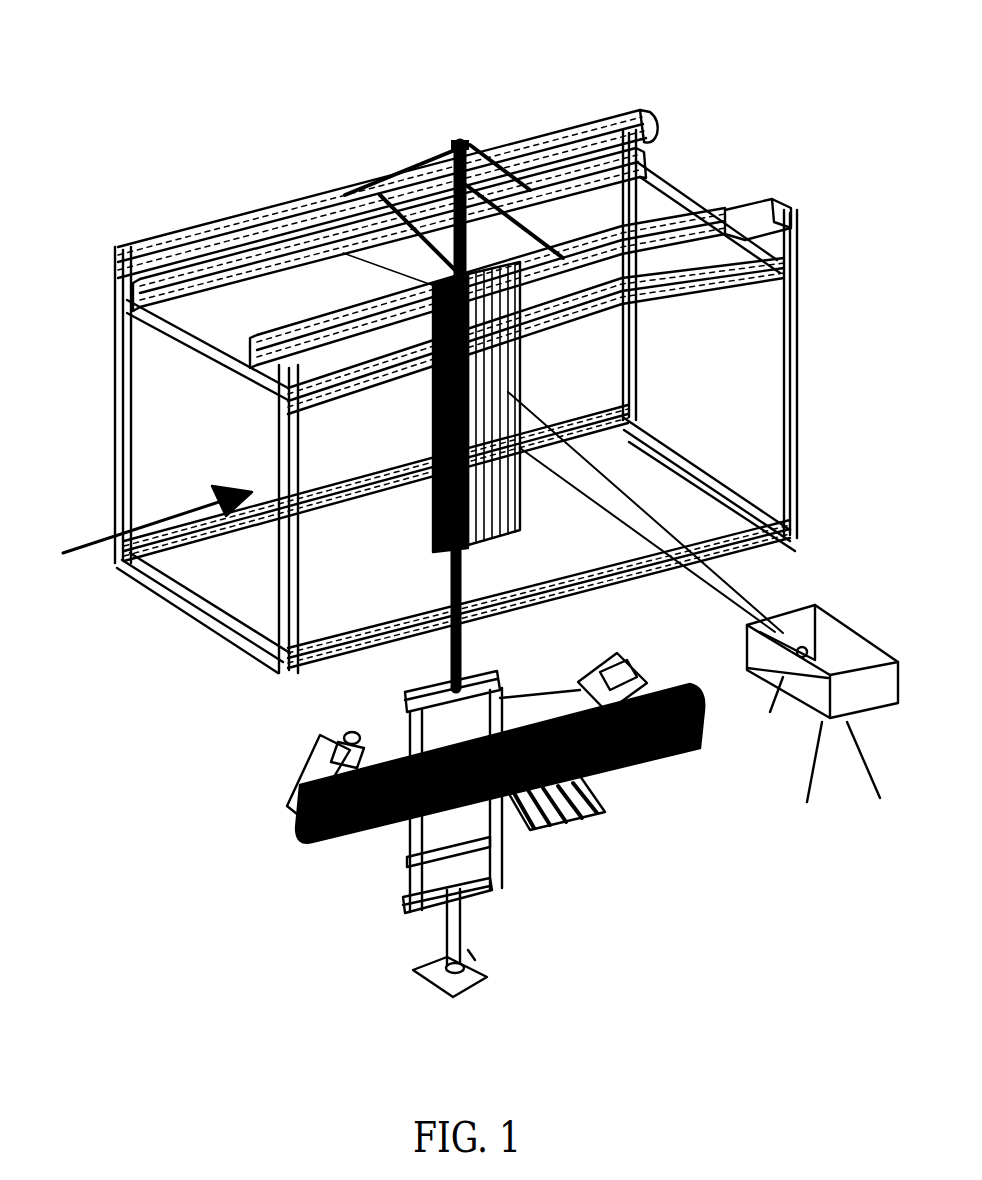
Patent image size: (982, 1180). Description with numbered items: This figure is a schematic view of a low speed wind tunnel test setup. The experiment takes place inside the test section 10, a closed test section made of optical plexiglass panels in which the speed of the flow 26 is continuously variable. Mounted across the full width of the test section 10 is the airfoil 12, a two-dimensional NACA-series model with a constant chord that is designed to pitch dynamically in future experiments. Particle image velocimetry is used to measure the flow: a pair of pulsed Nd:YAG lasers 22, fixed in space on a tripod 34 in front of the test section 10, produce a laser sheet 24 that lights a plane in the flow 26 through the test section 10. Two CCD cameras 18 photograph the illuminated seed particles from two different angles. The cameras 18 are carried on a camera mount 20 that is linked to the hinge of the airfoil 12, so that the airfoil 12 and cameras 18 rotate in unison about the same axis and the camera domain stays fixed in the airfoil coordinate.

The test section 10 is at (242, 86).
The airfoil 12 is at (438, 282).
The CCD cameras 18 is at (320, 770).
The camera mount 20 is at (495, 837).
The lasers 22 is at (807, 713).
The laser sheet 24 is at (605, 530).
The flow 26 is at (144, 525).
The tripod 34 is at (808, 763).